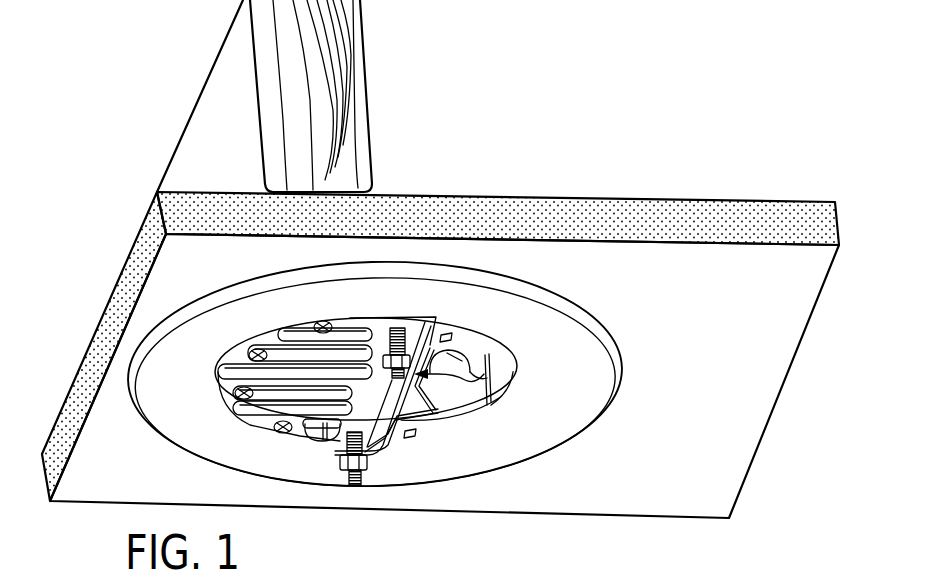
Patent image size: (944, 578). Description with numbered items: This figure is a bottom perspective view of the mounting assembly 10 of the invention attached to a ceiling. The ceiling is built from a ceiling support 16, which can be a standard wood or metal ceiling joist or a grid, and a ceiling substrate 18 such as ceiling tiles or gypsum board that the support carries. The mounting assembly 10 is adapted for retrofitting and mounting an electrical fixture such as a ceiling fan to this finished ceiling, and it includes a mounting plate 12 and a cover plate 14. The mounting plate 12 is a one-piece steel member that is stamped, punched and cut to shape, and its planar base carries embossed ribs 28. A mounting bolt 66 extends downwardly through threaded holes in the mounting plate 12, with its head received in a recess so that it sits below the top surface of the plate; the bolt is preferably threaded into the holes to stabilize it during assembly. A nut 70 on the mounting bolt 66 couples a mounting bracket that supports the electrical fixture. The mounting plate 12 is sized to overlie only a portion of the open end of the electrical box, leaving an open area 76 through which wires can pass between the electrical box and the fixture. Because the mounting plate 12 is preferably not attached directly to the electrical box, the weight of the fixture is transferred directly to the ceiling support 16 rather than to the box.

The mounting assembly 10 is at (421, 404).
The mounting plate 12 is at (512, 391).
The cover plate 14 is at (509, 456).
The ceiling support 16 is at (367, 75).
The ceiling substrate 18 is at (636, 496).
The embossed ribs 28 is at (238, 381).
The mounting bolt 66 is at (347, 477).
The nut 70 is at (357, 436).
The open area 76 is at (457, 405).